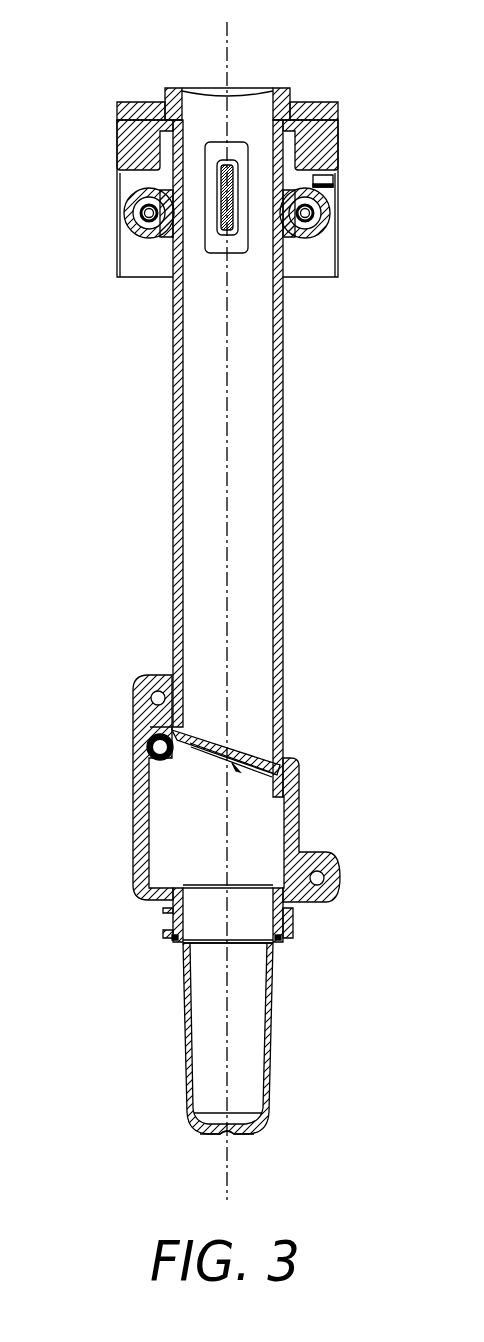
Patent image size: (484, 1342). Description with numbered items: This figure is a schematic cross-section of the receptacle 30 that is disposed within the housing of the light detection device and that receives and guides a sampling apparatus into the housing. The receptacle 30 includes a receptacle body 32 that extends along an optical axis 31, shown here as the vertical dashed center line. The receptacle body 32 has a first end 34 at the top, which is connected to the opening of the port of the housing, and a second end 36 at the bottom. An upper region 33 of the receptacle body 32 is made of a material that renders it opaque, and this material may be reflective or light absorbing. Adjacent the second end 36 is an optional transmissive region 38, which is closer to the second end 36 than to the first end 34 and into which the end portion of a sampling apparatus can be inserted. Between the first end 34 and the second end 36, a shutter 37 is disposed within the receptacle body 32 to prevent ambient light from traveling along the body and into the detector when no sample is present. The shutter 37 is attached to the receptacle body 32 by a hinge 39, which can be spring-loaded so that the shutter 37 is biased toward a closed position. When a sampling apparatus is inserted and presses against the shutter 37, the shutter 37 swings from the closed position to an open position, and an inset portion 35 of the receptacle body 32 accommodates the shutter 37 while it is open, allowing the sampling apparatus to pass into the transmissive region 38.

The receptacle 30 is at (337, 555).
The optical axis 31 is at (226, 30).
The receptacle body 32 is at (284, 494).
The upper region 33 is at (287, 405).
The first end 34 is at (281, 89).
The inset portion 35 is at (132, 818).
The second end 36 is at (252, 1137).
The shutter 37 is at (243, 752).
The transmissive region 38 is at (183, 1042).
The hinge 39 is at (148, 732).